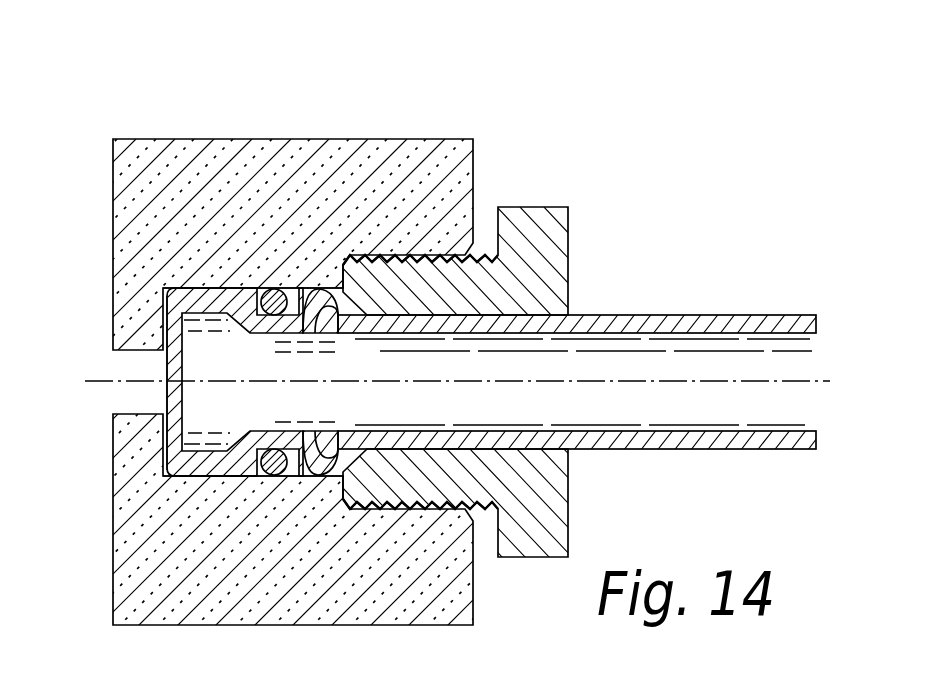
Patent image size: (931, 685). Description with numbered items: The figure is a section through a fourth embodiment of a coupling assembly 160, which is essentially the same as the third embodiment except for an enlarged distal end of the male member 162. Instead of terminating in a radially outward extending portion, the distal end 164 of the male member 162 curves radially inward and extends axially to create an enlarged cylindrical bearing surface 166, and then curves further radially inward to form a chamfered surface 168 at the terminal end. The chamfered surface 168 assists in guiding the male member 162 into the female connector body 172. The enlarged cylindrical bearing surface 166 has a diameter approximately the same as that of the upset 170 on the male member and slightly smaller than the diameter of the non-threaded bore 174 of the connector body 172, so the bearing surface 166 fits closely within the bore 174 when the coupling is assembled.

The coupling assembly 160 is at (533, 133).
The male member 162 is at (250, 298).
The distal end 164 is at (230, 292).
The enlarged cylindrical bearing surface 166 is at (207, 482).
The chamfered surface 168 is at (167, 477).
The upset 170 is at (325, 290).
The female connector body 172 is at (232, 136).
The non-threaded bore 174 is at (250, 318).